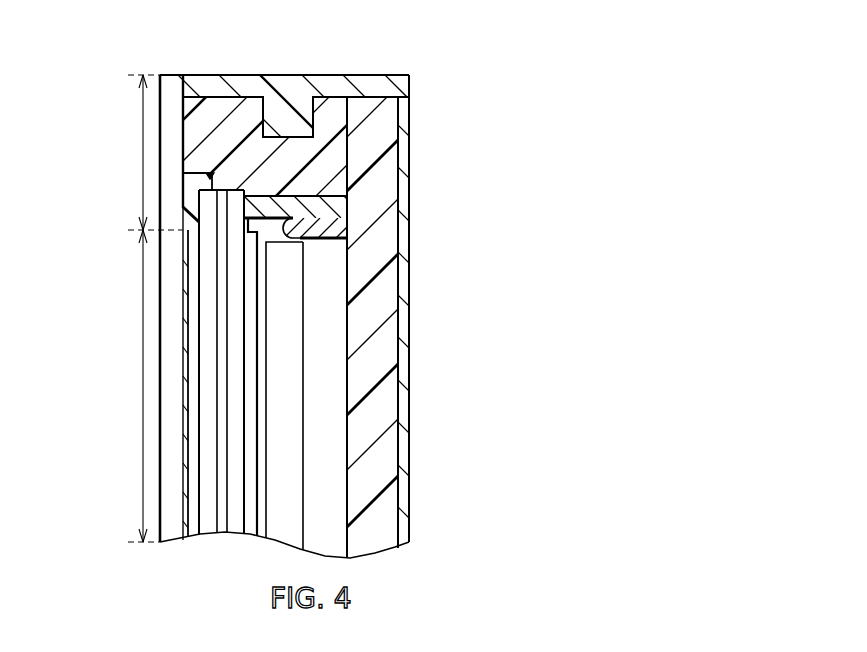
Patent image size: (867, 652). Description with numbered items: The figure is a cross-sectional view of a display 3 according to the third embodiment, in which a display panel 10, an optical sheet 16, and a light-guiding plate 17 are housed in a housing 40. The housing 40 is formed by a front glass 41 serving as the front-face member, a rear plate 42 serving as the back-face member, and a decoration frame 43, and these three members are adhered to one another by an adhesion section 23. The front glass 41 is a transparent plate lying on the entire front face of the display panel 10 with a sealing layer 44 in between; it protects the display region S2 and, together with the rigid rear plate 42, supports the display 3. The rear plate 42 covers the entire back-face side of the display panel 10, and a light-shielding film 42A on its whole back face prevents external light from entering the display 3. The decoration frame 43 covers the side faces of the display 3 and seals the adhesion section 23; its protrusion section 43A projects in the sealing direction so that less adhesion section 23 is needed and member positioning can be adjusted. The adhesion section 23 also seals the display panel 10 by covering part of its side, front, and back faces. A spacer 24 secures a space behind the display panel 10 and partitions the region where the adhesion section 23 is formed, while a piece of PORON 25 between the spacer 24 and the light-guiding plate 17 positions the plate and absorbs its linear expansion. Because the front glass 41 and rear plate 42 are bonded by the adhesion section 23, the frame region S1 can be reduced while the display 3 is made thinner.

The display 3 is at (418, 48).
The display panel 10 is at (265, 546).
The optical sheet 16 is at (283, 440).
The light-guiding plate 17 is at (328, 385).
The adhesion section 23 is at (193, 139).
The spacer 24 is at (252, 207).
The piece of PORON 25 is at (320, 238).
The housing 40 is at (493, 71).
The front glass 41 is at (175, 158).
The rear plate 42 is at (384, 222).
The light-shielding film 42A is at (395, 258).
The decoration frame 43 is at (405, 85).
The protrusion section 43A is at (193, 107).
The sealing layer 44 is at (190, 307).
The frame region S1 is at (143, 177).
The display region S2 is at (143, 346).